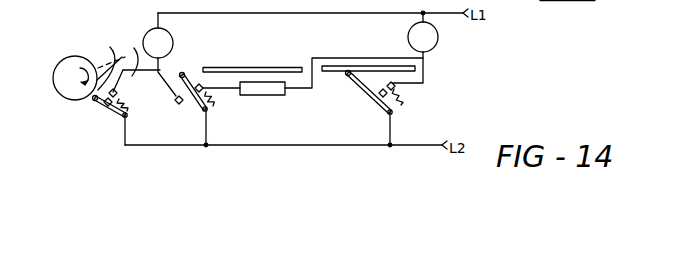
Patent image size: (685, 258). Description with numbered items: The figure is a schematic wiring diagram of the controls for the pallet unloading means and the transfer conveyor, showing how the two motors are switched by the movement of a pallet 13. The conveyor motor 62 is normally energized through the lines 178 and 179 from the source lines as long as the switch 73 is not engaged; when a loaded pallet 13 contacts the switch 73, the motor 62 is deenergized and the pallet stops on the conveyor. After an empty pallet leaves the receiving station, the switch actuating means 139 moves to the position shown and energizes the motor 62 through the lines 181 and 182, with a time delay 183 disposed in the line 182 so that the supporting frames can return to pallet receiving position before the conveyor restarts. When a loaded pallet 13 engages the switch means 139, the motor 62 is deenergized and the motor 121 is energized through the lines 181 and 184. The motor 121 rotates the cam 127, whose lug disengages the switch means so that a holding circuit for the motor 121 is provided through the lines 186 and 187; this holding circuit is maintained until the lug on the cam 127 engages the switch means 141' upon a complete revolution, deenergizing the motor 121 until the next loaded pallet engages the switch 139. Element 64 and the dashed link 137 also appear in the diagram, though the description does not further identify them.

The motor 121 is at (172, 36).
The motor 62 is at (436, 43).
The element 64 is at (593, 1).
The cam 127 is at (62, 95).
The line 187 is at (134, 48).
The thermostat actuating link 137 is at (109, 58).
The line 184 is at (166, 94).
The switch means 141' is at (108, 113).
The line 186 is at (127, 130).
The switch actuating means 139 is at (193, 65).
The line 181 is at (208, 133).
The pallet 13 is at (228, 69).
The line 182 is at (224, 90).
The time delay 183 is at (272, 96).
The switch 73 is at (378, 105).
The line 179 is at (426, 76).
The line 178 is at (392, 130).